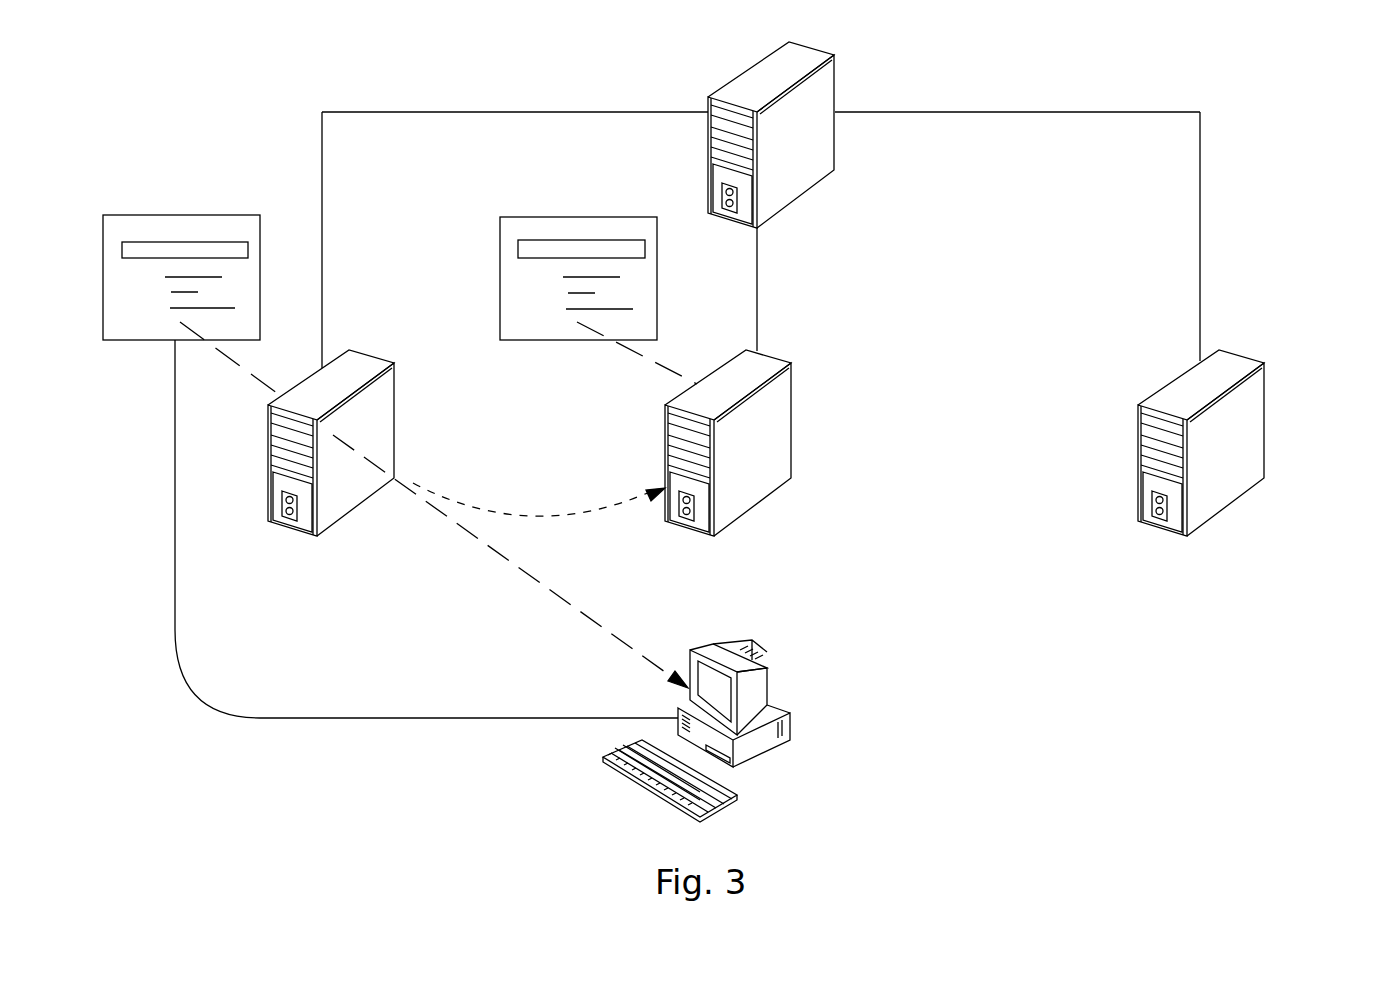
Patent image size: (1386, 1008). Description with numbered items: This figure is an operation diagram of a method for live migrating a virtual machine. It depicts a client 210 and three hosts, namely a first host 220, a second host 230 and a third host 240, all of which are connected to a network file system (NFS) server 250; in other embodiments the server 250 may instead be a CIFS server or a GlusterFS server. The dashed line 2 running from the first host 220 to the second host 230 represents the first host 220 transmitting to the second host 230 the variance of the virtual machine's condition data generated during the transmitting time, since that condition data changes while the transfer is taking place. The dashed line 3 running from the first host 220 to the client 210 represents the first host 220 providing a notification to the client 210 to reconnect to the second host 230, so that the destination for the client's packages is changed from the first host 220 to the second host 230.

The client 210 is at (762, 683).
The first host 220 is at (365, 413).
The second host 230 is at (780, 422).
The third host 240 is at (1253, 413).
The network file system (NFS) server 250 is at (820, 84).
The dashed line 2 is at (553, 512).
The dashed line 3 is at (503, 565).